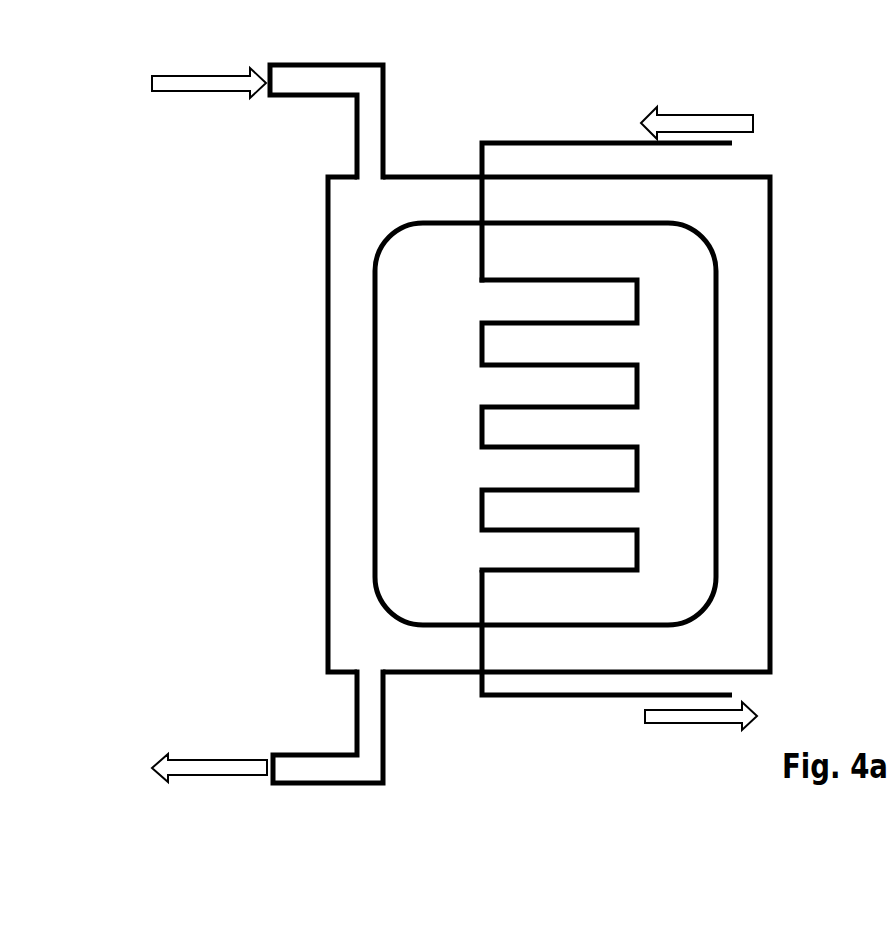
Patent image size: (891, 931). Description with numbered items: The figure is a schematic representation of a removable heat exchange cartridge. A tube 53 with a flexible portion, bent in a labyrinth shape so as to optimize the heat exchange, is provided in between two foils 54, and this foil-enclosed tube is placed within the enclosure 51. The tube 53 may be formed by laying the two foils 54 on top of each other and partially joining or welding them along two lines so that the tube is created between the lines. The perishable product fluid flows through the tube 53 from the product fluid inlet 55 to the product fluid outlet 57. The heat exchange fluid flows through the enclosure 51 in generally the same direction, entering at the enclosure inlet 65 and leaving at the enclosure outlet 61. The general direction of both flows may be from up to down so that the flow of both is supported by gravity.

The enclosure 51 is at (772, 372).
The tube 53 is at (637, 293).
The foils 54 is at (710, 245).
The product fluid inlet 55 is at (615, 140).
The product fluid outlet 57 is at (553, 703).
The enclosure outlet 61 is at (385, 695).
The enclosure inlet 65 is at (373, 147).